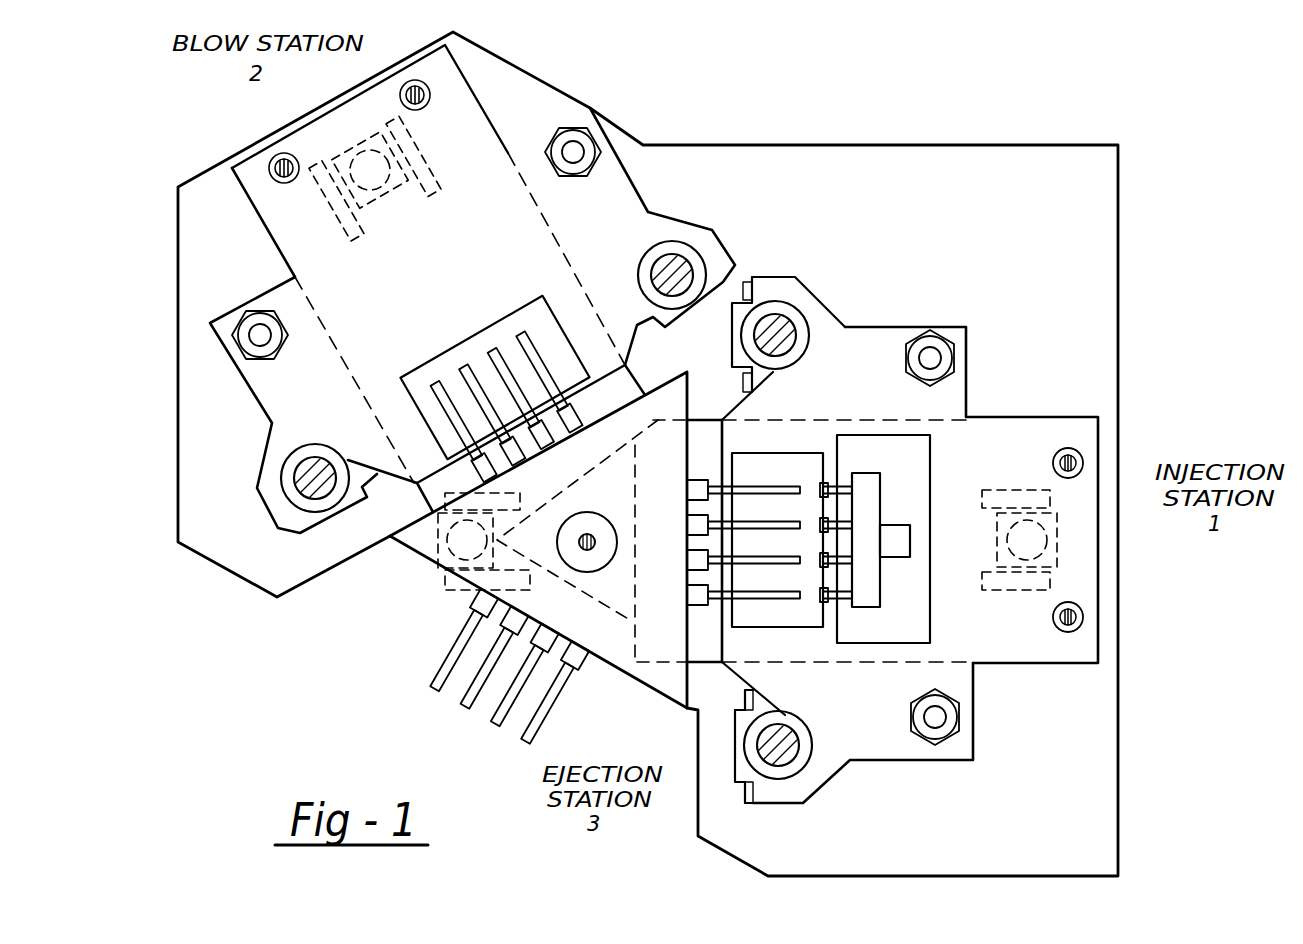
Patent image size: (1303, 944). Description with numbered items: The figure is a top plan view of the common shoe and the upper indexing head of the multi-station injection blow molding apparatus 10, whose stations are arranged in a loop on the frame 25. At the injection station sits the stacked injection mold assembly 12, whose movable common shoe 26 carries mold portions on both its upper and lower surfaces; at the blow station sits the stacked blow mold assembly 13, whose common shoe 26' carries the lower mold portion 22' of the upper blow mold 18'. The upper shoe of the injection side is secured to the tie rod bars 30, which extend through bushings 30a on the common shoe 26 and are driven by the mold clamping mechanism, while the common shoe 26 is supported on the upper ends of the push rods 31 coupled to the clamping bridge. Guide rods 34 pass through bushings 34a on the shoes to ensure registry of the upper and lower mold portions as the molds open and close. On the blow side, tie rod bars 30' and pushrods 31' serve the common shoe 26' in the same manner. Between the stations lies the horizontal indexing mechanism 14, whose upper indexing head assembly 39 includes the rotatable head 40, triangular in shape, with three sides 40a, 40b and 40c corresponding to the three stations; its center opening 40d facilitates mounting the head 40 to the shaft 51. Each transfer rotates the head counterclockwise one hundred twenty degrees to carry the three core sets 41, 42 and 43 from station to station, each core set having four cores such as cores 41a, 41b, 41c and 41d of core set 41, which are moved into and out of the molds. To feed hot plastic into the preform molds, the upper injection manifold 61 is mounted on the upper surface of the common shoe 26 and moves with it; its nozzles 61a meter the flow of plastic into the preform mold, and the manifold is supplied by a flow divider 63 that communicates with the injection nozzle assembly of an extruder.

The injection blow molding apparatus 10 is at (284, 742).
The stacked injection mold assembly 12 is at (916, 814).
The stacked blow mold assembly 13 is at (238, 259).
The horizontal indexing mechanism 14 is at (437, 626).
The upper blow mold 18' is at (494, 367).
The lower mold portion of the upper blow mold 22' is at (476, 388).
The frame 25 is at (733, 157).
The common shoe 26 is at (867, 466).
The common shoe 26' is at (438, 256).
The tie rod bars 30 is at (788, 783).
The tie rod bars 30' is at (568, 389).
The bushings 30a is at (792, 720).
The push rod 31 is at (974, 511).
The pushrods 31' is at (463, 245).
The guide rods 34 is at (1078, 456).
The bushings 34a is at (1080, 482).
The upper indexing head assembly 39 is at (576, 621).
The rotatable head 40 is at (640, 684).
The side of the rotatable head 40a is at (722, 668).
The side of the rotatable head 40b is at (646, 394).
The side of the rotatable head 40c is at (395, 541).
The center opening 40d is at (590, 521).
The core set 41 is at (744, 473).
The core 41a is at (756, 488).
The core 41b is at (752, 523).
The core 41c is at (748, 557).
The core 41d is at (748, 593).
The core set 42 is at (446, 411).
The core set 43 is at (533, 762).
The shaft 51 is at (596, 543).
The upper injection manifold 61 is at (868, 500).
The nozzles 61a is at (846, 520).
The flow divider 63 is at (893, 542).